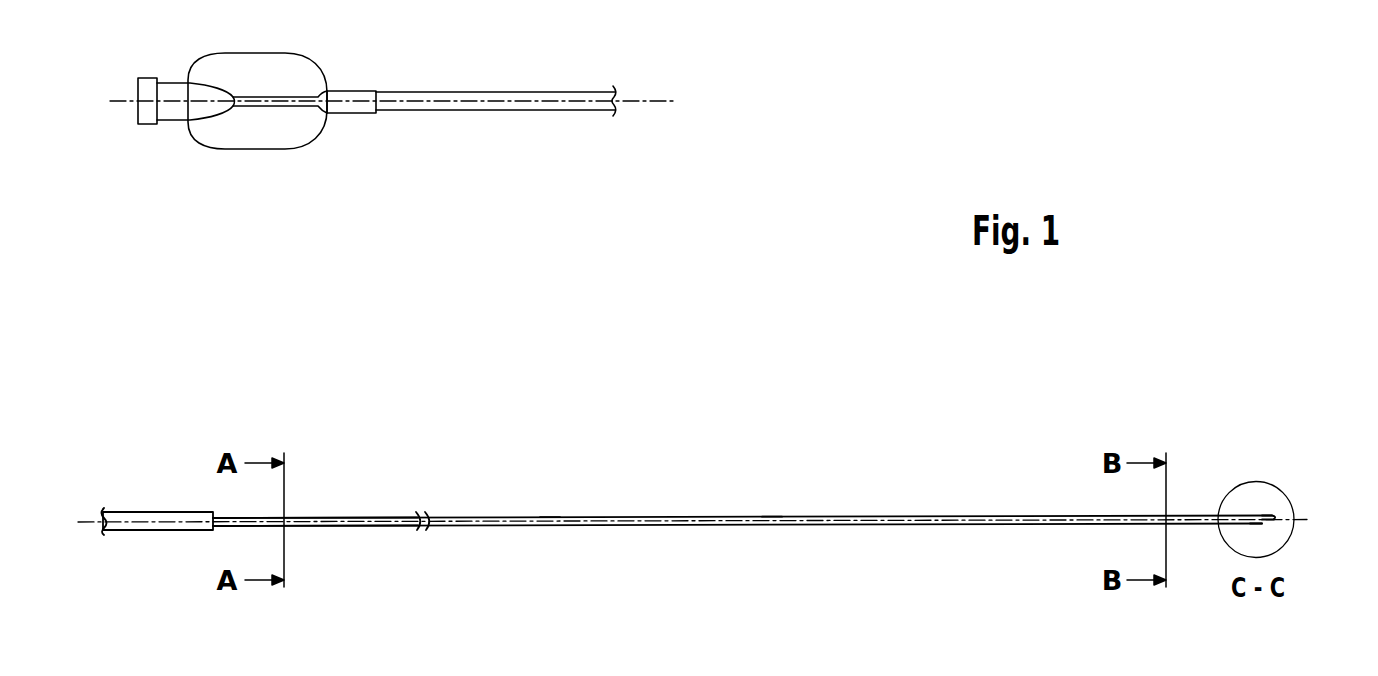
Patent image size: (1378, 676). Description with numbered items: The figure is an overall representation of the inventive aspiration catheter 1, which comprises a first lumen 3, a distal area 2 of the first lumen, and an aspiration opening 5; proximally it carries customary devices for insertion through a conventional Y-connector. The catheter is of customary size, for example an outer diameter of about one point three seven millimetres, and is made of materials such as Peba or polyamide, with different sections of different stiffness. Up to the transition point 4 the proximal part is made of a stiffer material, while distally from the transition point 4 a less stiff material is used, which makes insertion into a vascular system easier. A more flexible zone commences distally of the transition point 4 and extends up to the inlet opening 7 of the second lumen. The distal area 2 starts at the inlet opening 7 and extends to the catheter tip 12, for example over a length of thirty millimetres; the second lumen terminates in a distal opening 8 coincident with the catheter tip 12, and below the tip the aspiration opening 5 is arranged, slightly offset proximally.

The aspiration catheter 1 is at (659, 604).
The distal area 2 is at (980, 526).
The first lumen 3 is at (365, 528).
The transition point 4 is at (550, 538).
The aspiration opening 5 is at (1262, 522).
The inlet opening 7 is at (773, 541).
The distal opening 8 is at (1274, 517).
The catheter tip 12 is at (1275, 520).